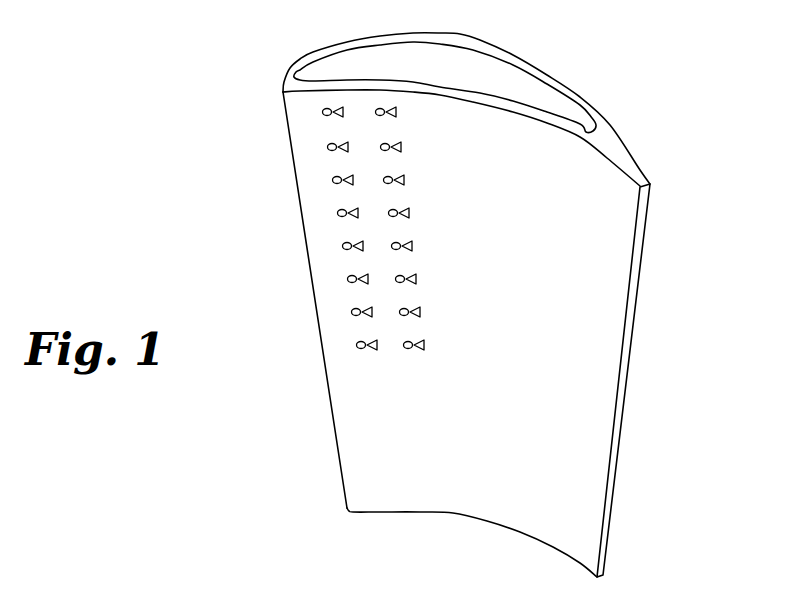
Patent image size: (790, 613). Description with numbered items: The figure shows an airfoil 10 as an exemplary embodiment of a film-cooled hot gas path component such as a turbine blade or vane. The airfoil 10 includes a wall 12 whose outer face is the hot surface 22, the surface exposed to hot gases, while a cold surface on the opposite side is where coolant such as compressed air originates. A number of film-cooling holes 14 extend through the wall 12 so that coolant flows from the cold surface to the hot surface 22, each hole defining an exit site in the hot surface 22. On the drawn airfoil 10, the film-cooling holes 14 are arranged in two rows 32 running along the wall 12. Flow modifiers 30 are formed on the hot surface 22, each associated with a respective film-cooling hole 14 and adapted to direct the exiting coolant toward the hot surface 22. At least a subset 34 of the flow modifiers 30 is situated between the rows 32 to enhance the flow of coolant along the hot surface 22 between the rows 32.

The airfoil 10 is at (141, 249).
The wall 12 is at (475, 46).
The film-cooling hole 14 is at (327, 150).
The hot surface 22 is at (298, 125).
The flow modifier 30 is at (415, 278).
The row 32 is at (410, 354).
The subset 34 is at (345, 104).